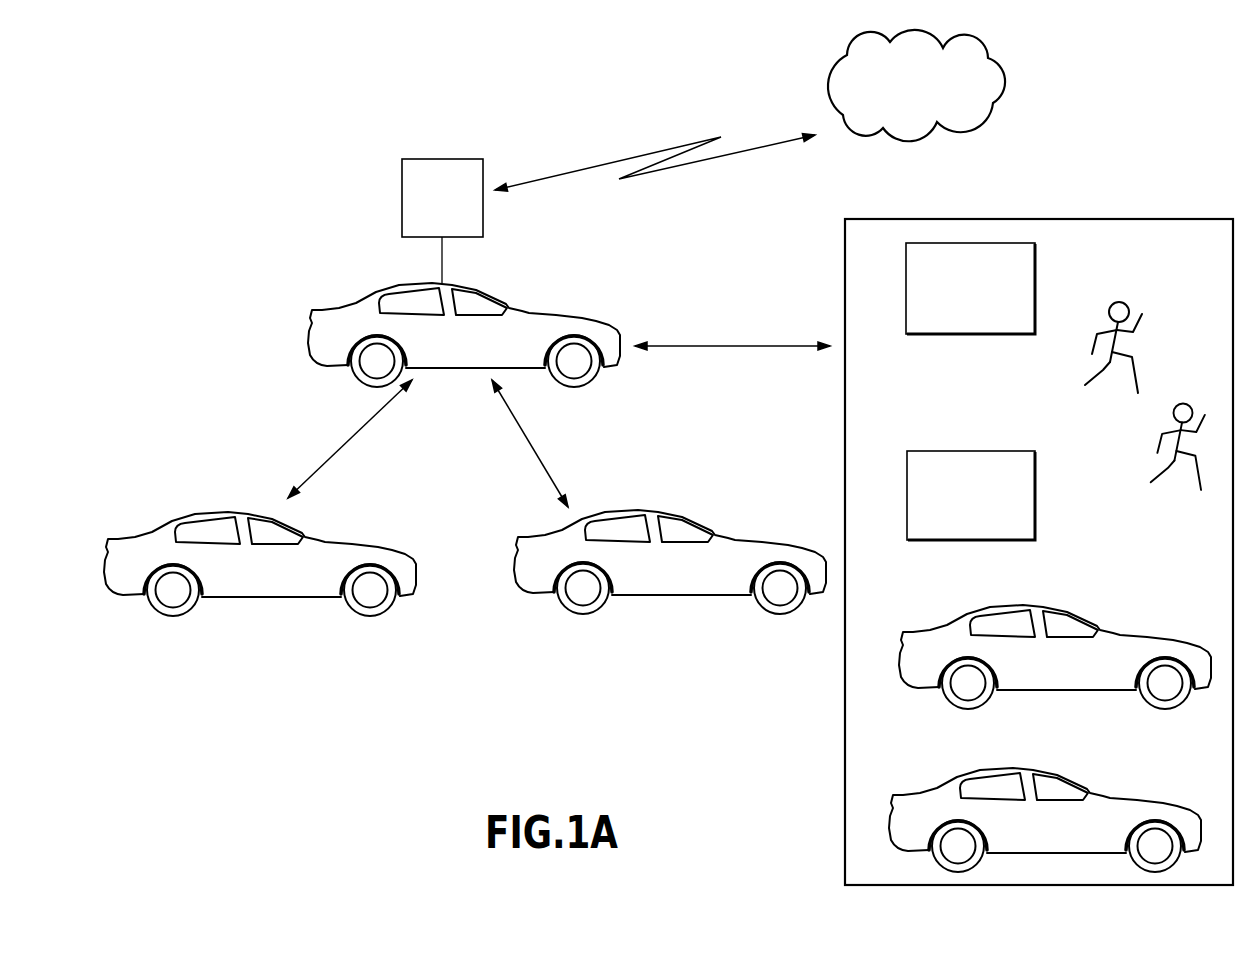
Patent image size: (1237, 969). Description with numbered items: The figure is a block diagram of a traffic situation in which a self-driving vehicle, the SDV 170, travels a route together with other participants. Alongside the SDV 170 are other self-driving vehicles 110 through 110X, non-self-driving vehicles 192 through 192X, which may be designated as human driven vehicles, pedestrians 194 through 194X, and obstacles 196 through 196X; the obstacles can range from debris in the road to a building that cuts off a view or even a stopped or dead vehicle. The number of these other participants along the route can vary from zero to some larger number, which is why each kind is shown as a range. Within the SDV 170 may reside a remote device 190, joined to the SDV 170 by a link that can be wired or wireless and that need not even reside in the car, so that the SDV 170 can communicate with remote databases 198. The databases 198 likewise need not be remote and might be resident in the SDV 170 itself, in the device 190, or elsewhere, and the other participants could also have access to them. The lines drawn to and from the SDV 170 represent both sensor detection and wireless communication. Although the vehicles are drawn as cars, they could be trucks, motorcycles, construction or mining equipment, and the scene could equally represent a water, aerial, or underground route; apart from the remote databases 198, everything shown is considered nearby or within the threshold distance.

The self-driving vehicle 110 is at (287, 583).
The self-driving vehicle 110X is at (712, 582).
The SDV 170 is at (490, 357).
The remote device 190 is at (462, 212).
The non-self-driving vehicle 192 is at (1083, 677).
The non-self-driving vehicle 192X is at (1087, 841).
The pedestrian 194 is at (1152, 321).
The pedestrian 194X is at (1135, 470).
The obstacle 196 is at (990, 307).
The obstacle 196X is at (997, 508).
The remote database 198 is at (1004, 82).